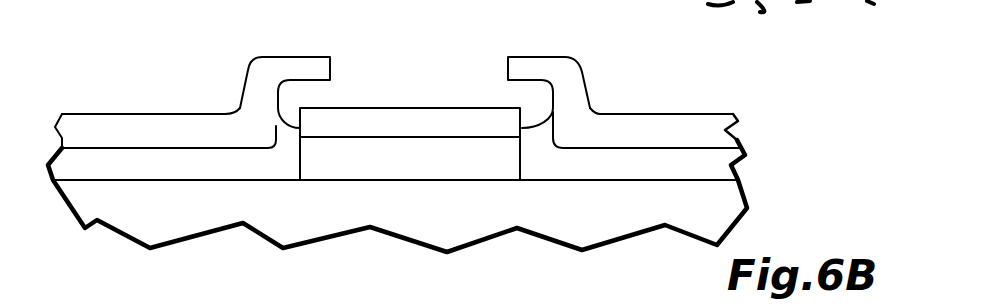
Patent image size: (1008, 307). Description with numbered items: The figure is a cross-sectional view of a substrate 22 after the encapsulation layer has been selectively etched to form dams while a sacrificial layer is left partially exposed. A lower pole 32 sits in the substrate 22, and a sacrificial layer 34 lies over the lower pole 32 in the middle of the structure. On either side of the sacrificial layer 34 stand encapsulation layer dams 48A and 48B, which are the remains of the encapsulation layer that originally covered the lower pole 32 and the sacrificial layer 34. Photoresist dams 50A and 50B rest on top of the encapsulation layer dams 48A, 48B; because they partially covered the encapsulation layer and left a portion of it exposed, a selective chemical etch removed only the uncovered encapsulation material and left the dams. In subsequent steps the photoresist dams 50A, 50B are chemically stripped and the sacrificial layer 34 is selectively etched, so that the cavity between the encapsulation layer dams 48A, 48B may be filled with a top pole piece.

The substrate 22 is at (640, 210).
The lower pole 32 is at (392, 163).
The sacrificial layer 34 is at (405, 115).
The encapsulation layer dam 48A is at (284, 134).
The encapsulation layer dam 48B is at (542, 132).
The photoresist dam 50A is at (296, 55).
The photoresist dam 50B is at (523, 58).